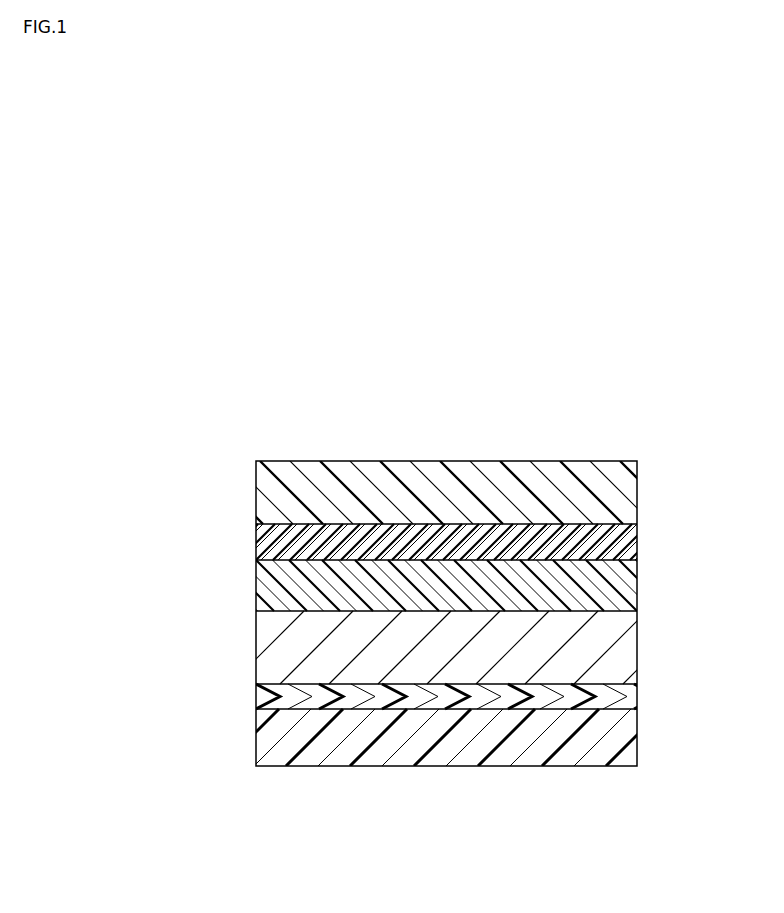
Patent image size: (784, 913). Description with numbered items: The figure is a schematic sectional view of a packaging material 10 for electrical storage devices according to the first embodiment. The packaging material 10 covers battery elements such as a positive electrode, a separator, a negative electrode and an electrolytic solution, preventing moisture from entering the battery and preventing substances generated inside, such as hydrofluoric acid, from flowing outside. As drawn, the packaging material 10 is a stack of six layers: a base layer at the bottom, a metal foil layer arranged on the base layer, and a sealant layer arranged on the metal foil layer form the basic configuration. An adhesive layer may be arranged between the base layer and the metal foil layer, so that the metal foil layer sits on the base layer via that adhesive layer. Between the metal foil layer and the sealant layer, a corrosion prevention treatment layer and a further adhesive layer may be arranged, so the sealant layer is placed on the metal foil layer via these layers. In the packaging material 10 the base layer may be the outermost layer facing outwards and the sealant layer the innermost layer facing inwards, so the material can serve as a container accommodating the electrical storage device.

The packaging material 10 is at (612, 370).